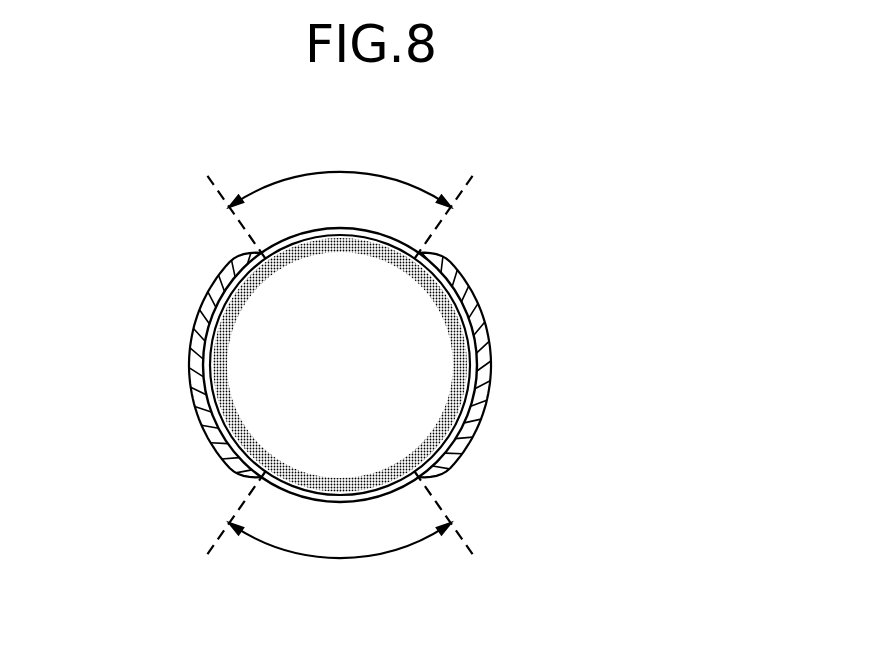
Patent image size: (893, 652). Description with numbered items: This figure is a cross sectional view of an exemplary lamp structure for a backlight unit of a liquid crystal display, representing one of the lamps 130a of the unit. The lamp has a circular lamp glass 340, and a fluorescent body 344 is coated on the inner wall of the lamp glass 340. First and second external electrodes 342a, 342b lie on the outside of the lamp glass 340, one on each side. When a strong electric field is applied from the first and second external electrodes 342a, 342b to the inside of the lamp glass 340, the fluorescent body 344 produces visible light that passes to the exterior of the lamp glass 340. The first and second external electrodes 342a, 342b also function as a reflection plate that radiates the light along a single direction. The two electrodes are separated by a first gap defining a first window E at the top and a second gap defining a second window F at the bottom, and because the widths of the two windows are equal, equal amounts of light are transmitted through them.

The lamp 130a is at (219, 134).
The lamp glass 340 is at (452, 265).
The first external electrode 342a is at (188, 355).
The second external electrode 342b is at (483, 312).
The fluorescent body 344 is at (468, 352).